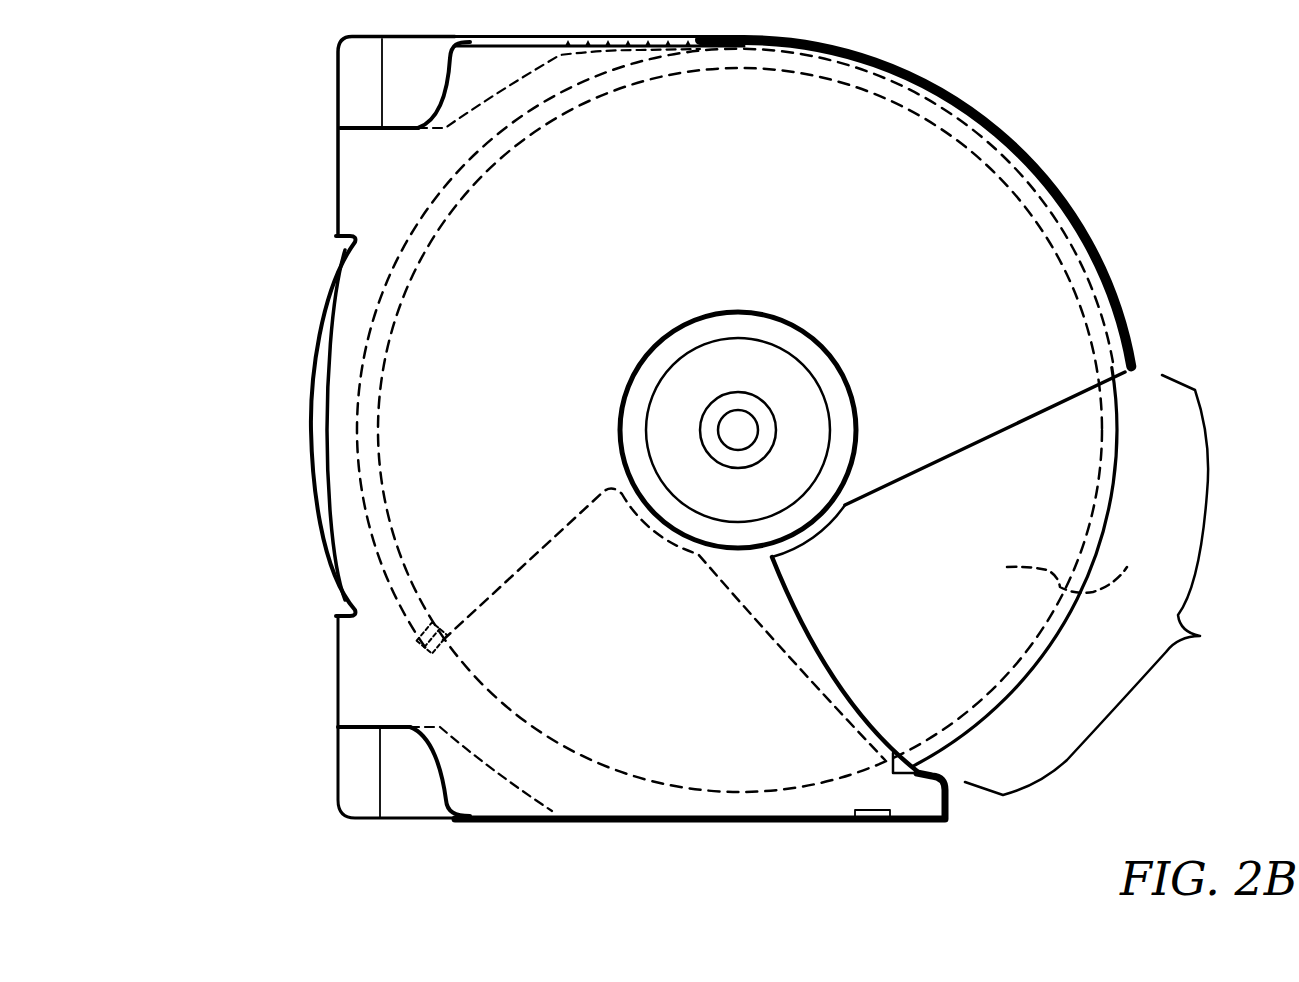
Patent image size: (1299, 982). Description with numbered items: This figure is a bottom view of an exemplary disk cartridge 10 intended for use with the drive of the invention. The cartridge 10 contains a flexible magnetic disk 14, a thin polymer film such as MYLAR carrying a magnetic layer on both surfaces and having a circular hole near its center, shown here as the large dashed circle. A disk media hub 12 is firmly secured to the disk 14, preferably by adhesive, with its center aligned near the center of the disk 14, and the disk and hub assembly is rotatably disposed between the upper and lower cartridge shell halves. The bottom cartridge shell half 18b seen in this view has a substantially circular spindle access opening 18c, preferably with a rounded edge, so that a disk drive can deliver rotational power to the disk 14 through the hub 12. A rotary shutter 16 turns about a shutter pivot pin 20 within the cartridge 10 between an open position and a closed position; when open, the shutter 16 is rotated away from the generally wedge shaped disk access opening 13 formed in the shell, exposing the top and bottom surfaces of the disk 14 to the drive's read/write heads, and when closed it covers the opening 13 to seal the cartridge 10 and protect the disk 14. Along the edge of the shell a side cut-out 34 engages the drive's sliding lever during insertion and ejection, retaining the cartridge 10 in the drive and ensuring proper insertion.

The disk cartridge 10 is at (95, 799).
The disk media hub 12 is at (660, 357).
The disk access opening 13 is at (1103, 585).
The flexible magnetic disk 14 is at (1081, 560).
The rotary shutter 16 is at (1118, 455).
The bottom cartridge shell half 18b is at (560, 790).
The spindle access opening 18c is at (728, 310).
The shutter pivot pin 20 is at (747, 425).
The side cut-out 34 is at (870, 824).